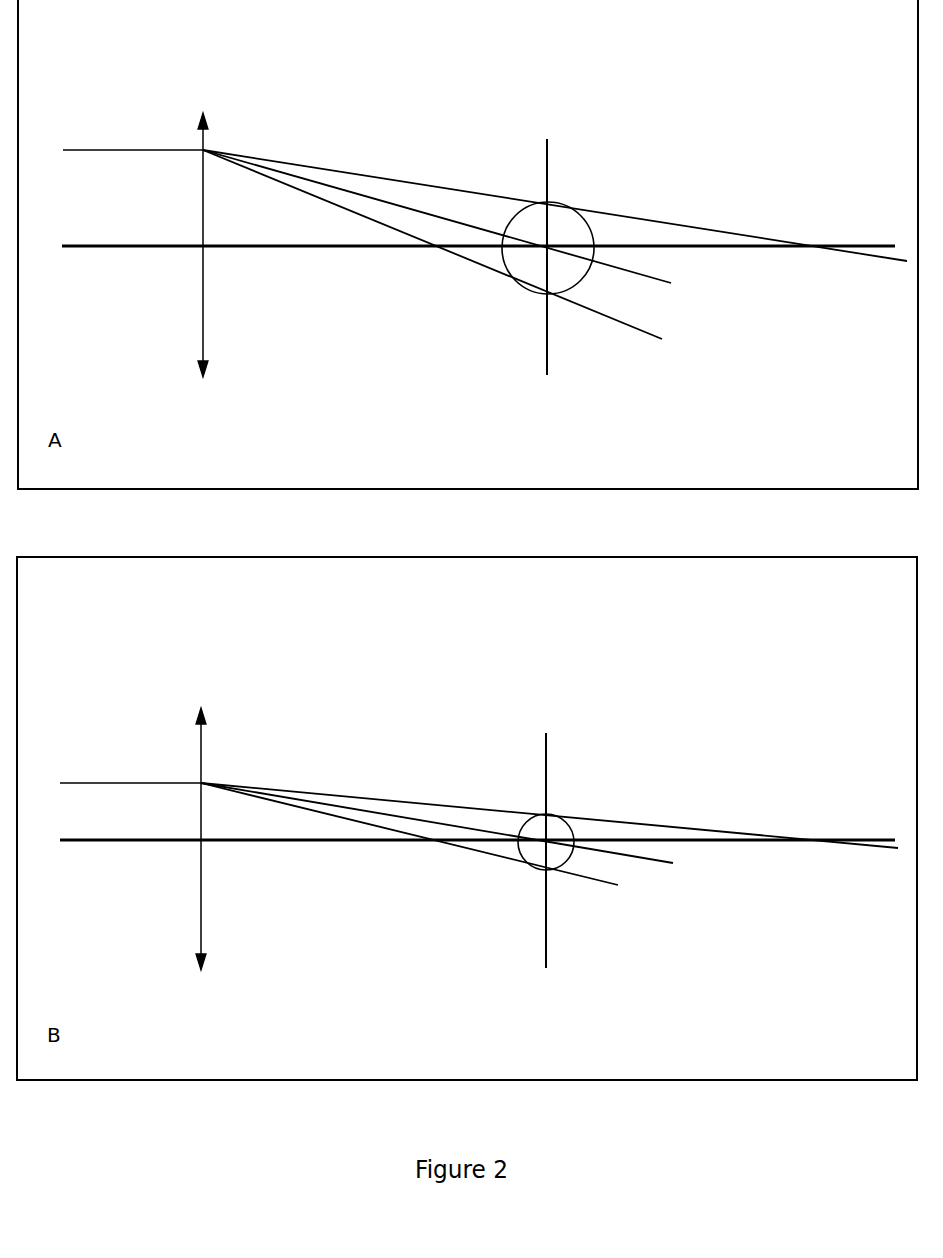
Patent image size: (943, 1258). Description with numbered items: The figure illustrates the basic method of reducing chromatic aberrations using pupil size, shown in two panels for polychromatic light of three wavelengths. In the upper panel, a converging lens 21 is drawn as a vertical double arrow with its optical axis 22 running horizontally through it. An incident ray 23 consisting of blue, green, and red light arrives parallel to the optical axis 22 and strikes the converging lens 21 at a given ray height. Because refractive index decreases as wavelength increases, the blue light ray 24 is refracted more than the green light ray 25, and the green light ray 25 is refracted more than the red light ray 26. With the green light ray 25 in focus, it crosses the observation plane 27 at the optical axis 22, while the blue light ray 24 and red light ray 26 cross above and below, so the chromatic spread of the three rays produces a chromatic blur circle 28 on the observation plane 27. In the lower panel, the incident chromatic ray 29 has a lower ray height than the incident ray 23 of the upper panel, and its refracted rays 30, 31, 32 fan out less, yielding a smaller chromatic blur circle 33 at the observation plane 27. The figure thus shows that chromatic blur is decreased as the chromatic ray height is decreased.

The converging lens 21 is at (207, 524).
The optical axis 22 is at (477, 529).
The incident ray 23 is at (133, 135).
The blue light ray 24 is at (452, 260).
The green light ray 25 is at (460, 230).
The red light ray 26 is at (555, 226).
The observation plane 27 is at (551, 532).
The chromatic blur circle 28 is at (593, 229).
The incident chromatic ray 29 is at (130, 766).
The refracted ray 30 is at (424, 848).
The refracted ray 31 is at (452, 837).
The refracted ray 32 is at (550, 840).
The chromatic blur circle 33 is at (575, 827).